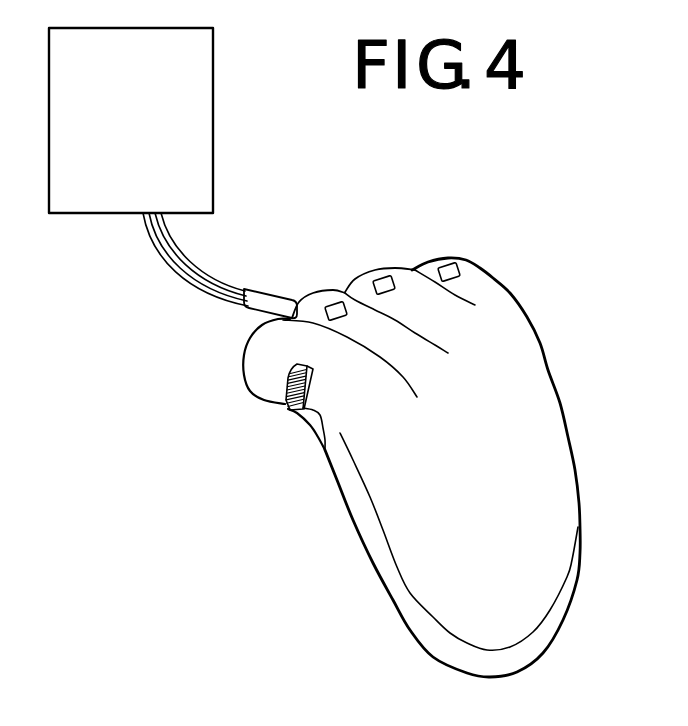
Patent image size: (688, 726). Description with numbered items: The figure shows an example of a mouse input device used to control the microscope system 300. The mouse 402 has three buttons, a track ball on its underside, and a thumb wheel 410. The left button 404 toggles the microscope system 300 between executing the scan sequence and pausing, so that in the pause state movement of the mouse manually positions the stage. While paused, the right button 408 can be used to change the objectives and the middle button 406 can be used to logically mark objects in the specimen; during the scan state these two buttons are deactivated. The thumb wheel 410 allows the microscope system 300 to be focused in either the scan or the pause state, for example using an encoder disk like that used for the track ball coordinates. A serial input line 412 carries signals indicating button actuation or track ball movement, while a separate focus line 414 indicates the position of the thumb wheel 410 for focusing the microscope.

The microscope system 300 is at (108, 120).
The mouse 402 is at (505, 259).
The left button 404 is at (333, 304).
The middle button 406 is at (379, 279).
The right button 408 is at (446, 267).
The thumb wheel 410 is at (293, 407).
The line 412 is at (200, 259).
The line 414 is at (176, 268).